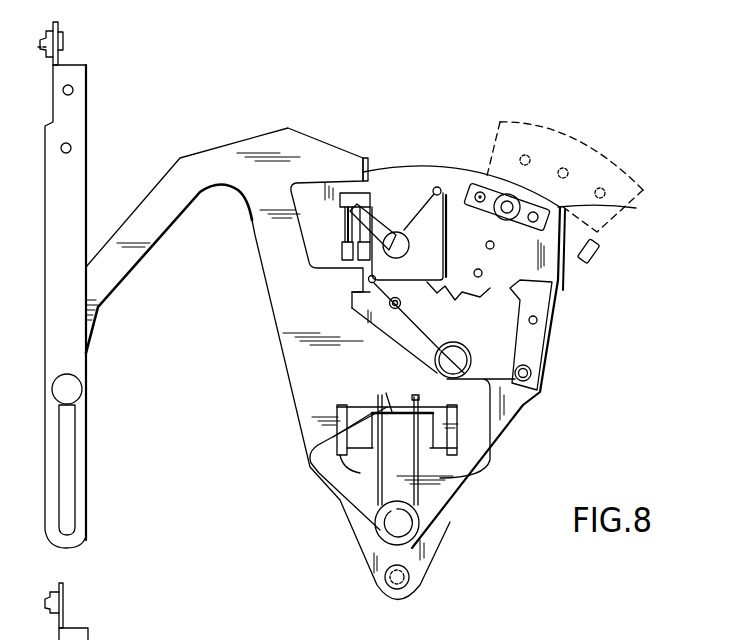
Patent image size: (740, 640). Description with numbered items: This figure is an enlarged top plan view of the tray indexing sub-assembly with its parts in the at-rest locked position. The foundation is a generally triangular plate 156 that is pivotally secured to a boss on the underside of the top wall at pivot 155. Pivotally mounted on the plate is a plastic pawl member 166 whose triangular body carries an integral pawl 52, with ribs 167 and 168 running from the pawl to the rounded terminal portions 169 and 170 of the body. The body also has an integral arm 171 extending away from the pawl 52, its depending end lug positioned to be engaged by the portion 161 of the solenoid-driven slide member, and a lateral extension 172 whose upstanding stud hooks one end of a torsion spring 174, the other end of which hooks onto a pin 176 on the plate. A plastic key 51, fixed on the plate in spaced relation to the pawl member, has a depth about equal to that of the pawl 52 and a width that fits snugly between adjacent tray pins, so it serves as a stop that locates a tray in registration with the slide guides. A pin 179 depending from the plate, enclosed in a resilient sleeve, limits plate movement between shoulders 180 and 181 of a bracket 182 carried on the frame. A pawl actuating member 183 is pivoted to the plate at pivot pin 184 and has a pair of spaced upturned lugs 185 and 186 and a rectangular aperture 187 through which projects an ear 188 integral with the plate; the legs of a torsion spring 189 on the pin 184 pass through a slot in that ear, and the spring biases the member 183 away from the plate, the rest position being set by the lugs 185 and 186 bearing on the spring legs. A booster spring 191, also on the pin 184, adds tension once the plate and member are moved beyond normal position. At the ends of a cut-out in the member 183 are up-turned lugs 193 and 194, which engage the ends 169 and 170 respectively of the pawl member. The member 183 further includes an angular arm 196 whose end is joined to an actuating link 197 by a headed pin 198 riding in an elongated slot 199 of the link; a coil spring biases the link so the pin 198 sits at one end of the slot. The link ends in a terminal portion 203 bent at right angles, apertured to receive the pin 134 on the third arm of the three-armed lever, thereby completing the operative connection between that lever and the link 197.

The terminal portion 203 is at (59, 23).
The pin 134 is at (63, 43).
The link 197 is at (78, 170).
The angular arm 196 is at (158, 230).
The headed pin 198 is at (75, 390).
The elongated slot 199 is at (72, 458).
The up-turned lug 193 is at (370, 158).
The portion of slide member 161 is at (366, 192).
The terminal portion 169 is at (438, 187).
The shoulder 180 is at (510, 165).
The bracket 182 is at (593, 152).
The arm 171 is at (377, 225).
The pin 179 is at (636, 208).
The rib 168 is at (450, 248).
The pawl member 166 is at (433, 271).
The shoulder 181 is at (598, 252).
The up-turned lug 194 is at (365, 282).
The pawl 52 is at (463, 292).
The key 51 is at (545, 292).
The rib 167 is at (428, 290).
The terminal portion 170 is at (370, 305).
The lateral extension 172 is at (413, 303).
The pawl actuating member 183 is at (340, 374).
The torsion spring 174 is at (425, 355).
The pin 176 is at (535, 372).
The ear 188 is at (405, 412).
The rectangular aperture 187 is at (440, 400).
The plate 156 is at (507, 413).
The upturned lug 185 is at (322, 468).
The upturned lug 186 is at (483, 477).
The torsion spring 189 is at (445, 495).
The booster spring 191 is at (340, 493).
The pivot pin 184 is at (398, 524).
The pivot 155 is at (408, 582).